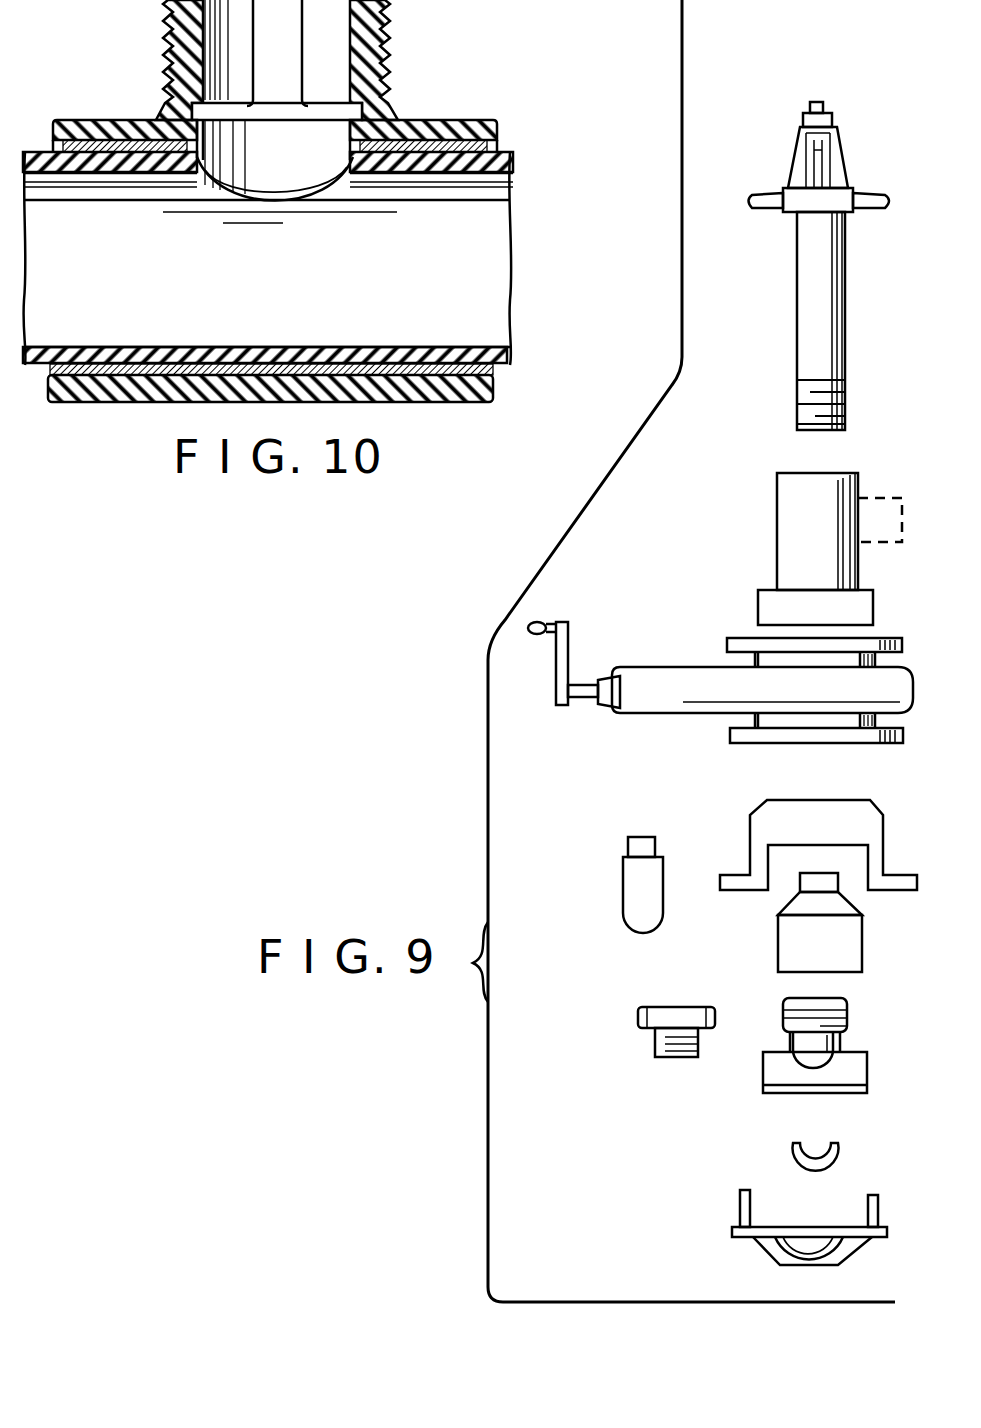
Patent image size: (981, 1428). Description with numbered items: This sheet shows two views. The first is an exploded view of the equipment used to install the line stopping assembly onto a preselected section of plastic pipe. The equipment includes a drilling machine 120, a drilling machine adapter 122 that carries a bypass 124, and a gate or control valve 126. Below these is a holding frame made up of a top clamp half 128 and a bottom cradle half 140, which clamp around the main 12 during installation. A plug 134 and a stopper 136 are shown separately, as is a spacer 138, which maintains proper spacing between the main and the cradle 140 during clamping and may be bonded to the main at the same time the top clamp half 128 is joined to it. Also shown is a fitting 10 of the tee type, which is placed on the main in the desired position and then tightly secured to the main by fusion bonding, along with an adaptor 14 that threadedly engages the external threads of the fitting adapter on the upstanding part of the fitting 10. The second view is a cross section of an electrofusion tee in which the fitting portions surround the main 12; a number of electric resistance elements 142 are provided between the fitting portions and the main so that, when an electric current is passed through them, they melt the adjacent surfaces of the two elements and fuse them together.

In FIG. 9, the fitting 10 is at (763, 1088).
In FIG. 10, the main 12 is at (500, 367).
In FIG. 9, the adaptor 14 is at (778, 944).
In FIG. 9, the drilling machine 120 is at (797, 327).
In FIG. 9, the drilling machine adapter 122 is at (777, 527).
In FIG. 9, the bypass 124 is at (882, 505).
In FIG. 9, the gate or control valve 126 is at (698, 636).
In FIG. 9, the top clamp half 128 is at (760, 812).
In FIG. 9, the plug 134 is at (645, 1007).
In FIG. 9, the stopper 136 is at (623, 905).
In FIG. 9, the spacer 138 is at (793, 1150).
In FIG. 9, the bottom cradle half 140 is at (755, 1240).
In FIG. 10, the electric resistance elements 142 is at (447, 118).